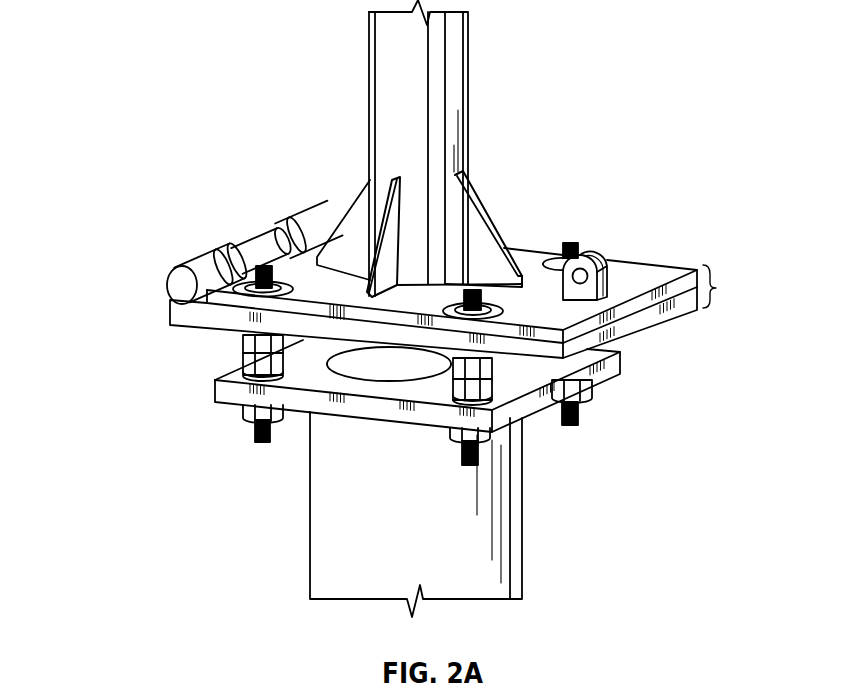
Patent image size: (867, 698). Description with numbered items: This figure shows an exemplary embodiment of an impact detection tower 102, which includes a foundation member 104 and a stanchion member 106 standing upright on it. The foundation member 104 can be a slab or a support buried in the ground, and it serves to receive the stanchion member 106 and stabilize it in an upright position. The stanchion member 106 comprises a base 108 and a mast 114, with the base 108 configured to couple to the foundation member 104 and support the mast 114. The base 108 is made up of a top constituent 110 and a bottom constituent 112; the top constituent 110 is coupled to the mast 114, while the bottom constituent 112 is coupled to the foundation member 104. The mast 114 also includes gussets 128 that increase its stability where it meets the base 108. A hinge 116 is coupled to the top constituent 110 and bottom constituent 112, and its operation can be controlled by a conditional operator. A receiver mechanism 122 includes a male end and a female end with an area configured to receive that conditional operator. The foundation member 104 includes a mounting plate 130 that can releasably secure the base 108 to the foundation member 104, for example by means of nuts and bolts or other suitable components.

The impact detection tower 102 is at (118, 43).
The foundation member 104 is at (555, 498).
The stanchion member 106 is at (649, 191).
The base 108 is at (718, 288).
The top constituent 110 is at (668, 275).
The bottom constituent 112 is at (578, 353).
The mast 114 is at (386, 60).
The hinge 116 is at (250, 238).
The receiver mechanism 122 is at (590, 290).
The gussets 128 is at (497, 270).
The mounting plate 130 is at (212, 386).